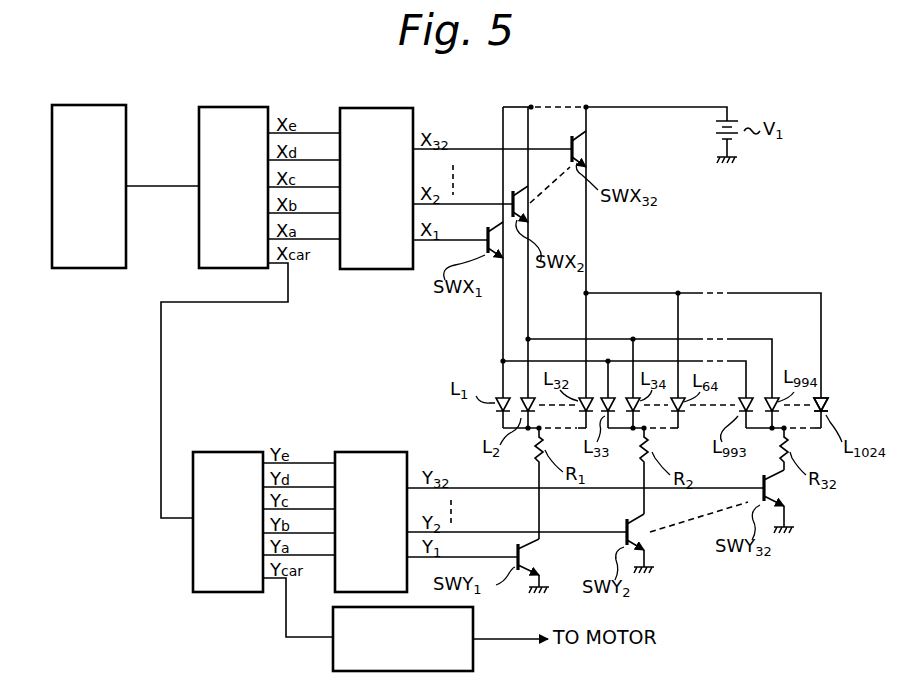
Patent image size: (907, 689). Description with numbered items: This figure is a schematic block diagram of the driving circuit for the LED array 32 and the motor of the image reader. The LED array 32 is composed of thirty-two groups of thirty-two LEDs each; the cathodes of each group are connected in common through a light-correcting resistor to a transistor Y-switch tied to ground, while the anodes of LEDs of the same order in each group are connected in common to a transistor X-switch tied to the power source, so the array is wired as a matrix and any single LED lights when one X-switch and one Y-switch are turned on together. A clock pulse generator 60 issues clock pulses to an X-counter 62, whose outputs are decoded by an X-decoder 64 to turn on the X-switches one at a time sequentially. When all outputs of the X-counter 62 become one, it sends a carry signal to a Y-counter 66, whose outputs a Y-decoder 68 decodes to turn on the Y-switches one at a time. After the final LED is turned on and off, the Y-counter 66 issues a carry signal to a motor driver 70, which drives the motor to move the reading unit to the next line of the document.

The clock pulse generator 60 is at (62, 108).
The X-counter 62 is at (215, 108).
The X-decoder 64 is at (357, 108).
The Y-counter 66 is at (225, 452).
The Y-decoder 68 is at (362, 452).
The motor driver 70 is at (333, 660).
The LED array 32 is at (828, 399).